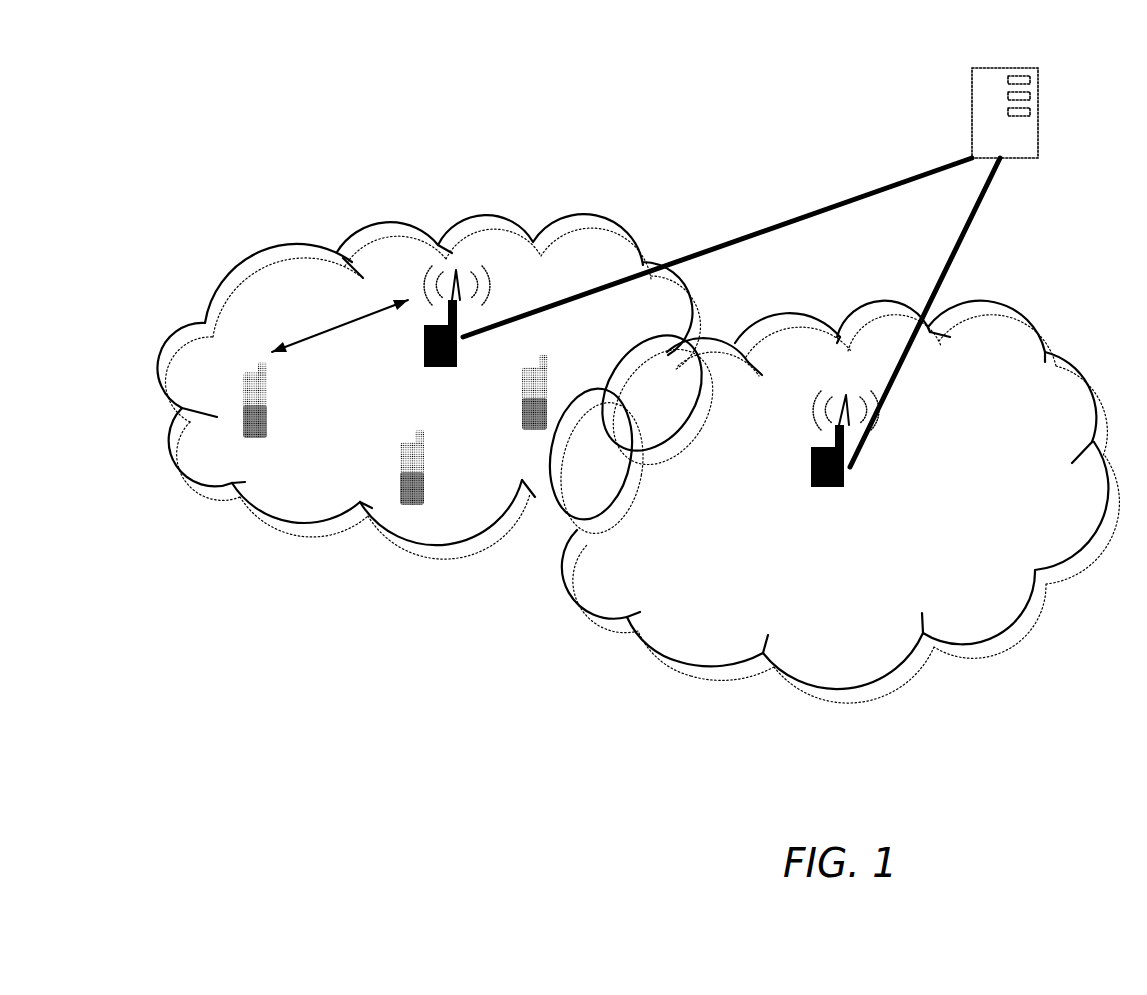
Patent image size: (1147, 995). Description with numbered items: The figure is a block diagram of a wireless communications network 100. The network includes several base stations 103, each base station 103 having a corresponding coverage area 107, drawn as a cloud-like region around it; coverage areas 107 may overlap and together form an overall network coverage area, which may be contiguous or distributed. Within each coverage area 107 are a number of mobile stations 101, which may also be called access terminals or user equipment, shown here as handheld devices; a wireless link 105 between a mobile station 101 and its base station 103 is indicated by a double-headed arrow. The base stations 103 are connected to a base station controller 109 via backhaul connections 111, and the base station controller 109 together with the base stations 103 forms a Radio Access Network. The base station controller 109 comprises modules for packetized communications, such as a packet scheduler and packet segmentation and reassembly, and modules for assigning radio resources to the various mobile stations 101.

The communications network 100 is at (646, 405).
The mobile station 101 is at (264, 423).
The base station 103 is at (418, 353).
The wireless communication link 105 is at (307, 337).
The coverage area 107 is at (297, 522).
The base station controller 109 is at (1038, 102).
The backhaul connection 111 is at (853, 203).